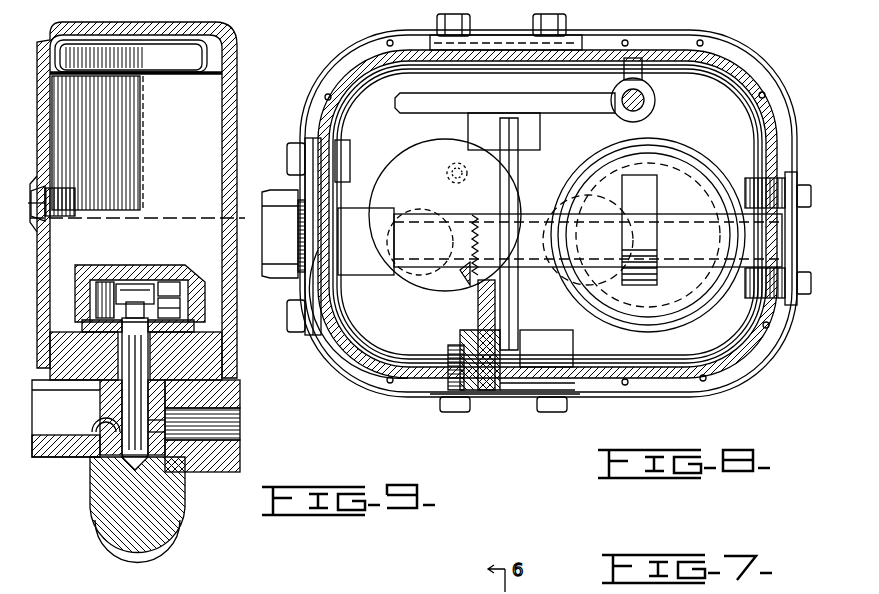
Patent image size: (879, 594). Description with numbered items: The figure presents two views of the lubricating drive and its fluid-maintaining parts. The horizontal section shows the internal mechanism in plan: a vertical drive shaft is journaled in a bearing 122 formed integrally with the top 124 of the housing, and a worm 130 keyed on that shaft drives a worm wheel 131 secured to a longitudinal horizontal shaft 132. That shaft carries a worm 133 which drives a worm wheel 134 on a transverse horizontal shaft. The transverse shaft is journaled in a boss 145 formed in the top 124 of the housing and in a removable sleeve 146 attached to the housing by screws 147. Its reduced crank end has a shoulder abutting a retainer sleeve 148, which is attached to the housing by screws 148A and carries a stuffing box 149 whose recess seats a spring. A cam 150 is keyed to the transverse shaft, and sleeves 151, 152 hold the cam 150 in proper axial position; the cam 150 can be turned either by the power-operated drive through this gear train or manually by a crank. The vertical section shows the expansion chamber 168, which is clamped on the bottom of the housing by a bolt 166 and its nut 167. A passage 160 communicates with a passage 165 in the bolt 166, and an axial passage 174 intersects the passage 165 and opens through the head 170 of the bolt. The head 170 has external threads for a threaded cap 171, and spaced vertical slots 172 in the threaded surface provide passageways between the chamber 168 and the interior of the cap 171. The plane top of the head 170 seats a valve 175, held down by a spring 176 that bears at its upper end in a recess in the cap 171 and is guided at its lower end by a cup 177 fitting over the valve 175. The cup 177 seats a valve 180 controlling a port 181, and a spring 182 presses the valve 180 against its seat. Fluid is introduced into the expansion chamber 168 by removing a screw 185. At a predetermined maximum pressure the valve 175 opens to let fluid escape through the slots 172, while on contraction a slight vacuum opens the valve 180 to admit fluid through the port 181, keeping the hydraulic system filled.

In FIG. 8, the bearing 122 is at (630, 60).
In FIG. 8, the top 124 is at (350, 365).
In FIG. 8, the worm 130 is at (657, 104).
In FIG. 8, the worm wheel 131 is at (432, 104).
In FIG. 8, the longitudinal horizontal shaft 132 is at (508, 178).
In FIG. 8, the worm 133 is at (470, 286).
In FIG. 8, the worm wheel 134 is at (518, 240).
In FIG. 8, the boss 145 is at (358, 224).
In FIG. 8, the removable sleeve 146 is at (705, 188).
In FIG. 8, the screws 147 is at (802, 300).
In FIG. 8, the retainer sleeve 148 is at (312, 140).
In FIG. 8, the screws 148A is at (290, 332).
In FIG. 8, the stuffing box 149 is at (282, 190).
In FIG. 8, the cam 150 is at (654, 207).
In FIG. 8, the sleeve 151 is at (432, 245).
In FIG. 8, the sleeve 152 is at (606, 247).
In FIG. 9, the passage 160 is at (232, 443).
In FIG. 9, the passage 165 is at (108, 440).
In FIG. 9, the bolt 166 is at (122, 478).
In FIG. 9, the nut 167 is at (135, 548).
In FIG. 9, the expansion chamber 168 is at (292, 68).
In FIG. 9, the head 170 is at (78, 393).
In FIG. 9, the threaded cap 171 is at (137, 314).
In FIG. 9, the vertical slots 172 is at (205, 378).
In FIG. 9, the axial passage 174 is at (150, 428).
In FIG. 9, the valve 175 is at (180, 325).
In FIG. 9, the spring 176 is at (180, 290).
In FIG. 9, the cup 177 is at (176, 306).
In FIG. 9, the valve 180 is at (132, 296).
In FIG. 9, the port 181 is at (143, 302).
In FIG. 9, the spring 182 is at (168, 286).
In FIG. 9, the screw 185 is at (75, 202).